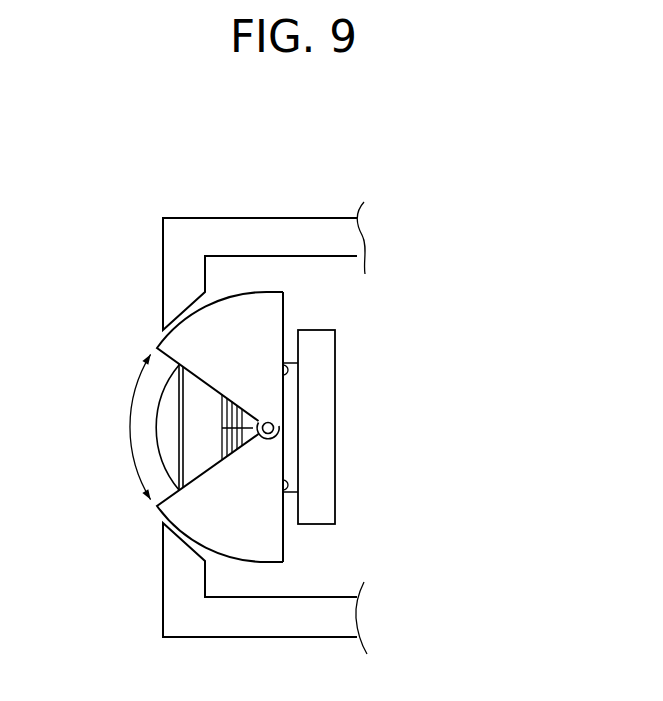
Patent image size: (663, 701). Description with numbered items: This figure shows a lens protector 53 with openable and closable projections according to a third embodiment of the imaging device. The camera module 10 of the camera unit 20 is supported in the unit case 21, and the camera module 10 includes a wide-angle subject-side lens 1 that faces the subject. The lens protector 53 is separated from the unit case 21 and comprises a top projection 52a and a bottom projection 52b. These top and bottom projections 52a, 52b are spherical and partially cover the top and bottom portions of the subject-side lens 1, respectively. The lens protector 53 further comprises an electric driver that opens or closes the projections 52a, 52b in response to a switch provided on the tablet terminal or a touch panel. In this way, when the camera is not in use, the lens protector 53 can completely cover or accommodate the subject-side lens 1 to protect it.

The subject-side lens 1 is at (157, 423).
The camera module 10 is at (347, 409).
The camera unit 20 is at (336, 196).
The unit case 21 is at (205, 218).
The top projection 52a is at (283, 298).
The bottom projection 52b is at (283, 543).
The lens protector 53 is at (138, 345).